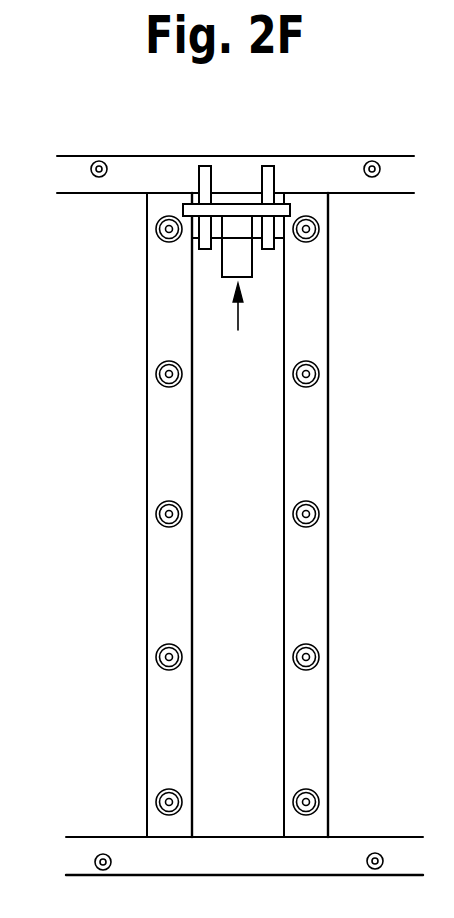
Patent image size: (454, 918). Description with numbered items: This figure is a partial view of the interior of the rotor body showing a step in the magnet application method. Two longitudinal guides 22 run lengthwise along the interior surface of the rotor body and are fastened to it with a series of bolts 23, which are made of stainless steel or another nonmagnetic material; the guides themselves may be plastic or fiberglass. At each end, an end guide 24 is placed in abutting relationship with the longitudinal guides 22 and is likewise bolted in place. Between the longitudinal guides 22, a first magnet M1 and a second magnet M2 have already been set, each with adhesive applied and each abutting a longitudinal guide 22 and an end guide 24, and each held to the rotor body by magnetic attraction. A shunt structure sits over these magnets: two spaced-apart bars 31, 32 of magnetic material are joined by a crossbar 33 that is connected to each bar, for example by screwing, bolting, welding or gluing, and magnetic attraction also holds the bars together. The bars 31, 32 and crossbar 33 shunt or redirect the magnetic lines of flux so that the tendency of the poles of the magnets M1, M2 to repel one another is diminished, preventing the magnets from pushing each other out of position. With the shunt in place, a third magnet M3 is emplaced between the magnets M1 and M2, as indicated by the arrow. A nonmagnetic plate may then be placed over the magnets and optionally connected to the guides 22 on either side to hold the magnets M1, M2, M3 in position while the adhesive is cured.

The longitudinal guide 22 is at (167, 336).
The bolt 23 is at (305, 382).
The end guide 24 is at (120, 180).
The bar 31 is at (197, 179).
The bar 32 is at (269, 184).
The crossbar 33 is at (285, 207).
The first magnet M1 is at (257, 197).
The second magnet M2 is at (215, 197).
The third magnet M3 is at (235, 265).